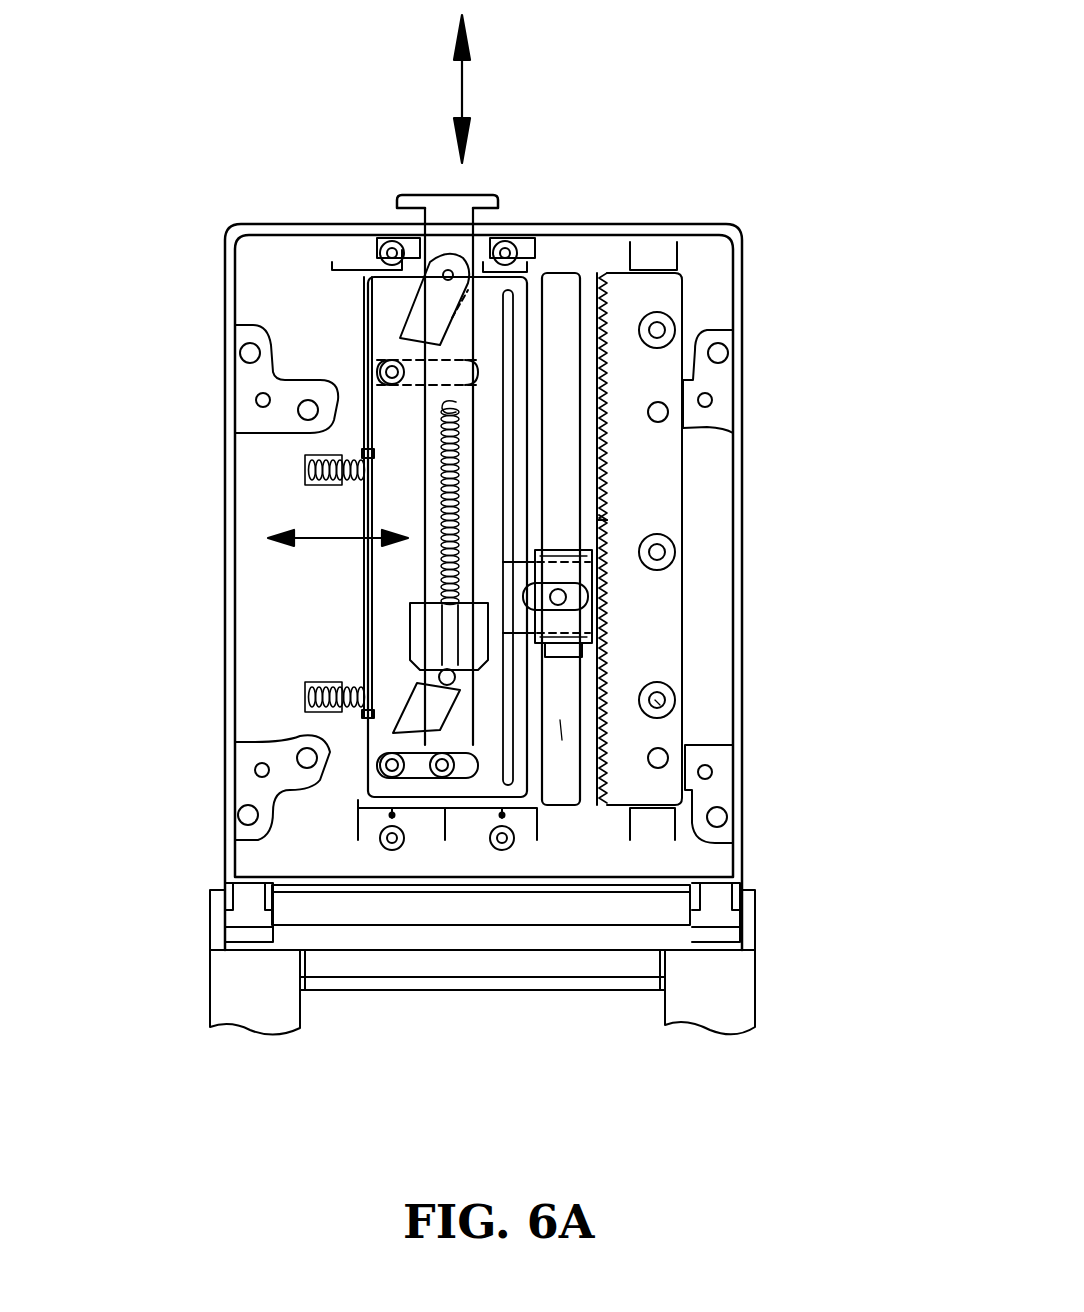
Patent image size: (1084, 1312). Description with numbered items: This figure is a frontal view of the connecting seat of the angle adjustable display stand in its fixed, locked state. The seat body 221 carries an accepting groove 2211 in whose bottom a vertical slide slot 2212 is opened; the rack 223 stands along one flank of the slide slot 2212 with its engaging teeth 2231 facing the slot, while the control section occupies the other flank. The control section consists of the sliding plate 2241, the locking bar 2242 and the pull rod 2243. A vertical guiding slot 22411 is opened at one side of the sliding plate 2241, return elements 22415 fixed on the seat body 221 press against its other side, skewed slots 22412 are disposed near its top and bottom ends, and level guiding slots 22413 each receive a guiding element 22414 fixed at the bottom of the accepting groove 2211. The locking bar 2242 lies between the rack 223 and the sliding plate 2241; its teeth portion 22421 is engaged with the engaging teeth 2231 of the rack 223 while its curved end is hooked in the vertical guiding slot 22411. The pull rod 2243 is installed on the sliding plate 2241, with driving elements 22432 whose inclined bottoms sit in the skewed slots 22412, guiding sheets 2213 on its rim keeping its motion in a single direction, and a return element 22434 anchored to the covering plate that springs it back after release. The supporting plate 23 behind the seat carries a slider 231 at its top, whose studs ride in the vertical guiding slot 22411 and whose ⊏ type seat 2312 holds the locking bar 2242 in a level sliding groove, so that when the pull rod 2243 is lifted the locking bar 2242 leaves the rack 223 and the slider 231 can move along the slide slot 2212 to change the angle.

The seat body 221 is at (742, 265).
The accepting groove 2211 is at (275, 576).
The vertical slide slot 2212 is at (563, 285).
The guiding sheets 2213 is at (490, 268).
The engaging teeth 2231 is at (595, 520).
The rack 223 is at (657, 495).
The ⊏ type seat 2312 is at (605, 525).
The teeth portion 22421 is at (585, 598).
The locking bar 2242 is at (592, 640).
The slider 231 is at (570, 735).
The supporting plate 23 is at (660, 700).
The sliding plate 2241 is at (365, 343).
The vertical guiding slot 22411 is at (513, 297).
The skewed slot 22412 is at (405, 330).
The level guiding slot 22413 is at (413, 755).
The guiding element 22414 is at (380, 768).
The return element 22415 is at (305, 450).
The pull rod 2243 is at (453, 200).
The driving element 22432 is at (425, 290).
The return element 22434 is at (437, 578).